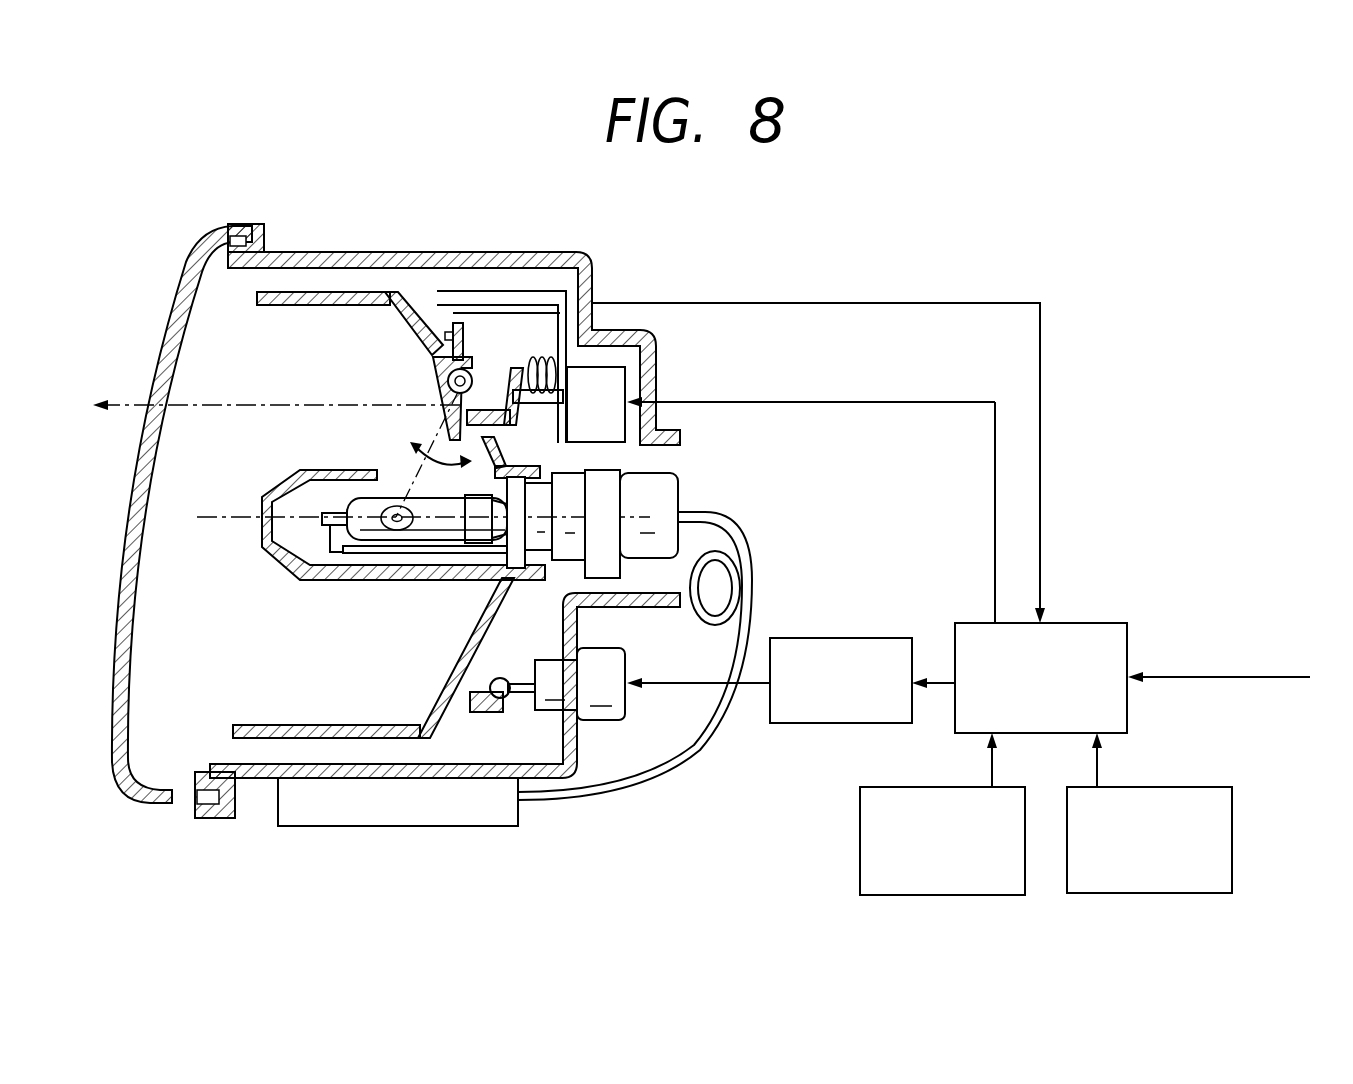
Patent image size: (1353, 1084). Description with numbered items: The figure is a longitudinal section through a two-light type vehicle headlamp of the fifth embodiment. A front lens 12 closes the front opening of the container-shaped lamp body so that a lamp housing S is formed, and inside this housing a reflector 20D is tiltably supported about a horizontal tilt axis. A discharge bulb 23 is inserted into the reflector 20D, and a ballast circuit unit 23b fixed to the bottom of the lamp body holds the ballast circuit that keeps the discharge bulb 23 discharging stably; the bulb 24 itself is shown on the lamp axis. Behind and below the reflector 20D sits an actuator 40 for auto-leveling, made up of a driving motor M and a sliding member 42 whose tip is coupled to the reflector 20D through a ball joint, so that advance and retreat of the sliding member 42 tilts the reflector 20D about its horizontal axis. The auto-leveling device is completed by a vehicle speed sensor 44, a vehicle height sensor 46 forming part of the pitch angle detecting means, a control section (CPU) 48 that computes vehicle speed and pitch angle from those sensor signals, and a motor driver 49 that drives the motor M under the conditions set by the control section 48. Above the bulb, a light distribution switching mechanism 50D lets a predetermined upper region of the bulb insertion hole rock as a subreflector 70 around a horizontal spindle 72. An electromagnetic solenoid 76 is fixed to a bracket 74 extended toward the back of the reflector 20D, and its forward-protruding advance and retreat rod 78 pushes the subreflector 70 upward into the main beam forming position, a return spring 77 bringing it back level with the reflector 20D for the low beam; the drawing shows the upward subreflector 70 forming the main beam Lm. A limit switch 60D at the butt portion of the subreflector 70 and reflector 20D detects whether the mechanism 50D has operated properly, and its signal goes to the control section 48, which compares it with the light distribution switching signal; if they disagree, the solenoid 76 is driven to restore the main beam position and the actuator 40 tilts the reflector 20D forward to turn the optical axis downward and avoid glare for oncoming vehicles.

The front lens 12 is at (170, 336).
The reflector 20D is at (372, 290).
The discharge bulb 23 is at (378, 578).
The ballast circuit unit 23b is at (312, 822).
The light source bulb 24 is at (258, 533).
The actuator 40 is at (680, 854).
The sliding member 42 is at (512, 698).
The driving motor M is at (603, 720).
The vehicle speed sensor 44 is at (1232, 820).
The vehicle height sensor 46 is at (860, 830).
The control section (CPU) 48 is at (1093, 622).
The motor driver 49 is at (832, 638).
The light distribution switching mechanism 50D is at (494, 358).
The limit switch 60D is at (410, 323).
The subreflector 70 is at (448, 383).
The horizontal spindle 72 is at (476, 382).
The bracket 74 is at (553, 270).
The electromagnetic solenoid 76 is at (613, 390).
The return spring 77 is at (548, 350).
The advance and retreat rod 78 is at (540, 428).
The lamp housing S is at (187, 652).
The main beam Lm is at (279, 390).